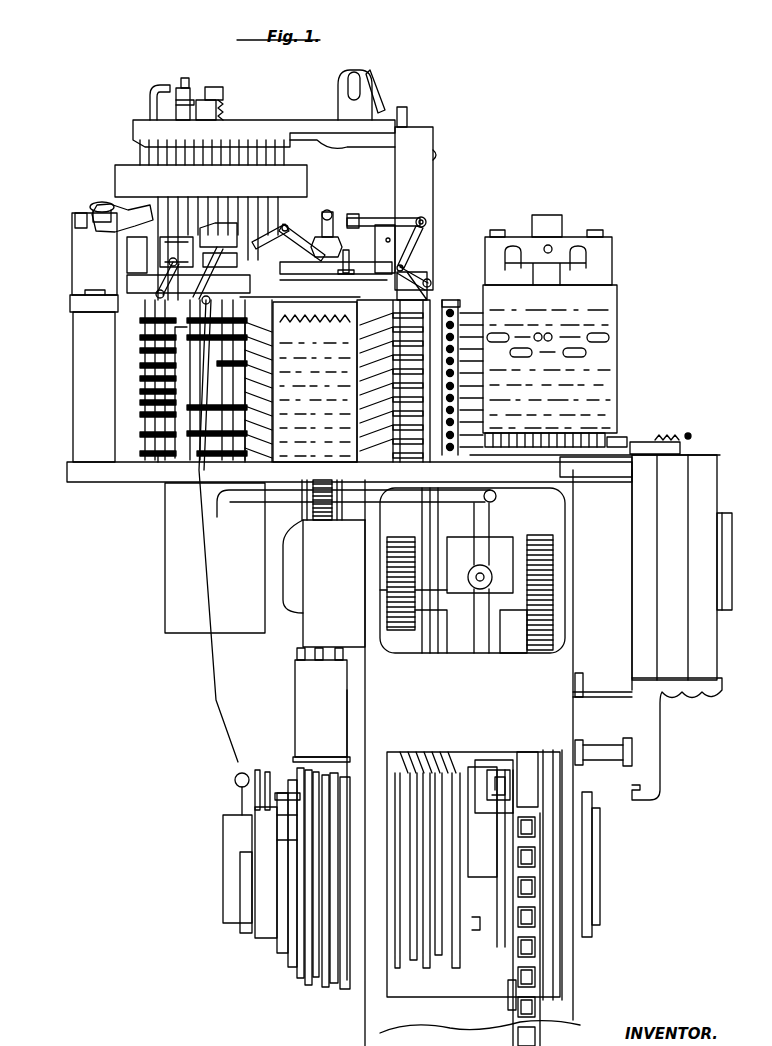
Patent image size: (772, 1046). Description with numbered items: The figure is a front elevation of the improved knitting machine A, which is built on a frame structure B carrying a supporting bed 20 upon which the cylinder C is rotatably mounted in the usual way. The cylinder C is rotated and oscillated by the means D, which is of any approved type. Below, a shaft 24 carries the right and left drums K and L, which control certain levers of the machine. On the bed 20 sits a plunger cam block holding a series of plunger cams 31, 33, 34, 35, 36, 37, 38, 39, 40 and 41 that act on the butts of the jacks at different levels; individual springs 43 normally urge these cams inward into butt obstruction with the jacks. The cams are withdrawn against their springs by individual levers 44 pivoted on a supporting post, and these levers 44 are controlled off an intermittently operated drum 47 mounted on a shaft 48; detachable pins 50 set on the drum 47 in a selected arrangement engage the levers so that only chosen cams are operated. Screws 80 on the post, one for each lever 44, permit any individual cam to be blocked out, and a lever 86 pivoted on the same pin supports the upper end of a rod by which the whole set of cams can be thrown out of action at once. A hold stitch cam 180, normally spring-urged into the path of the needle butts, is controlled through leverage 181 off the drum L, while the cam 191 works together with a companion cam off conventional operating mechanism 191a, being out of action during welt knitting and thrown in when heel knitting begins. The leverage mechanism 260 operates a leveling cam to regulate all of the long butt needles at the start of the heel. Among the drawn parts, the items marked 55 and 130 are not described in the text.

The supporting bed 20 is at (75, 470).
The cylinder C is at (157, 410).
The plunger cam 41 is at (241, 461).
The plunger cam 40 is at (258, 392).
The plunger cam 39 is at (300, 390).
The plunger cam 31 is at (315, 335).
The plunger cam 33 is at (315, 368).
The plunger cam 34 is at (315, 383).
The plunger cam 35 is at (315, 396).
The plunger cam 36 is at (315, 412).
The plunger cam 37 is at (315, 435).
The plunger cam 38 is at (326, 458).
The screws 80 is at (463, 368).
The levers 44 is at (480, 310).
The drum 47 is at (567, 354).
The pins 50 is at (585, 352).
The shaft 48 is at (552, 265).
The hatched strip 55 is at (592, 432).
The cam 191 is at (351, 210).
The operating mechanism 191a is at (407, 220).
The lever 86 is at (430, 292).
The knob and bar 130 is at (341, 307).
The springs 43 is at (320, 313).
The hold stitch cam 180 is at (188, 275).
The knitting machine A is at (170, 509).
The leverage 181 is at (205, 538).
The leverage mechanism 260 is at (250, 503).
The frame structure B is at (435, 686).
The shaft 24 is at (368, 978).
The means to operate the cylinder D is at (548, 570).
The right drum K is at (592, 903).
The left drum L is at (272, 924).